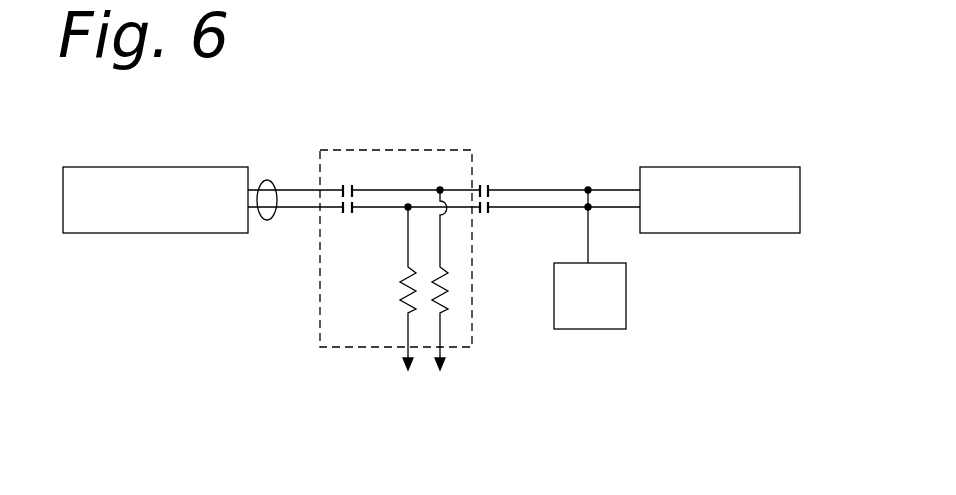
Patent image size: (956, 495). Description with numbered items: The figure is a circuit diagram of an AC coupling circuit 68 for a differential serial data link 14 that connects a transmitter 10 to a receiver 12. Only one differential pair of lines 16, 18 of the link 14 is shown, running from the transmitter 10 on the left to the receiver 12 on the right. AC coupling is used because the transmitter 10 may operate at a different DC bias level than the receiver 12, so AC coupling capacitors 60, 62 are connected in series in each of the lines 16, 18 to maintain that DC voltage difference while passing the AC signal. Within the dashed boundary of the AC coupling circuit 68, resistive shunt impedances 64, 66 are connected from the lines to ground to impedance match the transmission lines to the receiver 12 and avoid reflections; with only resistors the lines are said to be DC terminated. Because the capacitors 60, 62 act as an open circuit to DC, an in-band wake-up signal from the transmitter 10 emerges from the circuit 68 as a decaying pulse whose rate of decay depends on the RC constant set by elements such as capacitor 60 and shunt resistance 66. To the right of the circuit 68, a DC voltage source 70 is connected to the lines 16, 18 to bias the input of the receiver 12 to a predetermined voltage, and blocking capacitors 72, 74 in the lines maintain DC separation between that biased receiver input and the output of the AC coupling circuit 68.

The transmitter 10 is at (157, 167).
The receiver 12 is at (722, 167).
The differential serial data link 14 is at (263, 182).
The first line of differential pair 16 is at (297, 190).
The second line of differential pair 18 is at (298, 208).
The AC coupling capacitor 60 is at (353, 186).
The AC coupling capacitor 62 is at (356, 212).
The shunt impedance 64 is at (403, 280).
The shunt impedance 66 is at (450, 290).
The AC coupling circuit 68 is at (448, 137).
The DC voltage source 70 is at (626, 294).
The blocking capacitor 72 is at (490, 212).
The blocking capacitor 74 is at (490, 187).